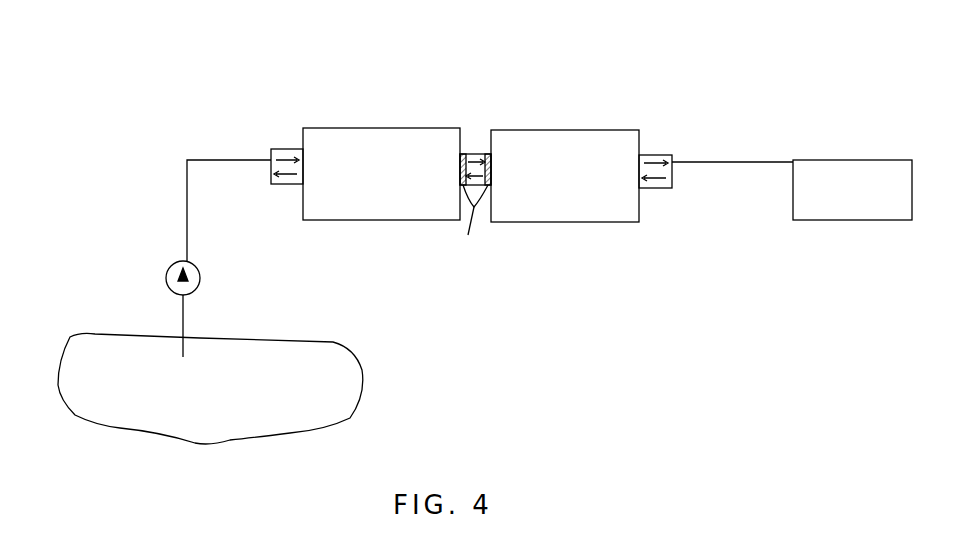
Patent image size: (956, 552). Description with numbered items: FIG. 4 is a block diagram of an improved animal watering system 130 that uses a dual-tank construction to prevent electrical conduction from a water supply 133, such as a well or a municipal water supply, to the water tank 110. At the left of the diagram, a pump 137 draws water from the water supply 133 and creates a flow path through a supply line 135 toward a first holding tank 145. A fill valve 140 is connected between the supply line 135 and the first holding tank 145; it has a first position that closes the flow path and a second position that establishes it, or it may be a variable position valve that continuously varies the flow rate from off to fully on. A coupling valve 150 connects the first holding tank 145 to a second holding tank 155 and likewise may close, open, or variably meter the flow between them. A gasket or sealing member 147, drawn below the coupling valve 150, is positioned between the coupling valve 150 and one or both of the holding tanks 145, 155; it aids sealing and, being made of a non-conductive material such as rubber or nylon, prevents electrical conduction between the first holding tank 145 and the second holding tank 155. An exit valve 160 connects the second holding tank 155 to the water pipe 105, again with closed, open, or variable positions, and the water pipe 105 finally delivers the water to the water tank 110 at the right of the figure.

The animal watering system 130 is at (215, 85).
The supply line 135 is at (215, 158).
The pump 137 is at (200, 276).
The water supply 133 is at (262, 399).
The fill valve 140 is at (284, 150).
The first holding tank 145 is at (392, 184).
The gasket or sealing member 147 is at (468, 226).
The coupling valve 150 is at (476, 153).
The second holding tank 155 is at (586, 184).
The exit valve 160 is at (655, 155).
The water pipe 105 is at (720, 160).
The water tank 110 is at (870, 196).